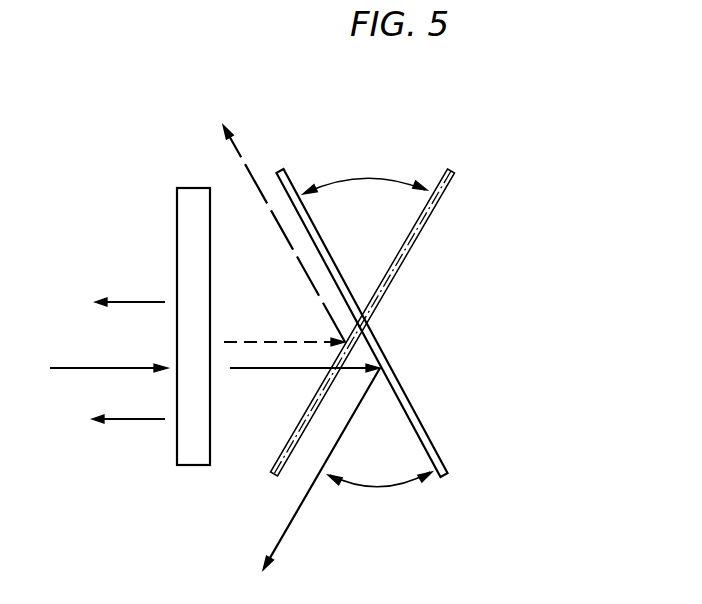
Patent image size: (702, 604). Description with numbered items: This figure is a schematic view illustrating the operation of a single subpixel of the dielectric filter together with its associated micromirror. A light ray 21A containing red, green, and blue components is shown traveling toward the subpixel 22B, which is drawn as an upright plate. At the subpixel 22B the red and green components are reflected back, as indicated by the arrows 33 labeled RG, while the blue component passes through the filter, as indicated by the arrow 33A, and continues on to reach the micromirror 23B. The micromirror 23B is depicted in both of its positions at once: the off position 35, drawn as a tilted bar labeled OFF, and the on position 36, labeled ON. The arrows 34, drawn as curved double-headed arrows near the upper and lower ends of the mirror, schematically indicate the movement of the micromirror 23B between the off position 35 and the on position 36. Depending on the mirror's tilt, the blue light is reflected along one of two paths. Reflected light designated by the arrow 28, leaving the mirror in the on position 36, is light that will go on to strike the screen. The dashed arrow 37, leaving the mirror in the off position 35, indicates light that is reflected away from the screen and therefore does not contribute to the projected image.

The light ray 21A is at (80, 368).
The subpixel 22B is at (188, 187).
The micromirror 23B is at (410, 400).
The arrow 28 is at (283, 534).
The arrows 33 is at (118, 300).
The arrow 33A is at (268, 370).
The arrows 34 is at (362, 180).
The off position 35 is at (412, 255).
The on position 36 is at (436, 478).
The arrow 37 is at (245, 158).